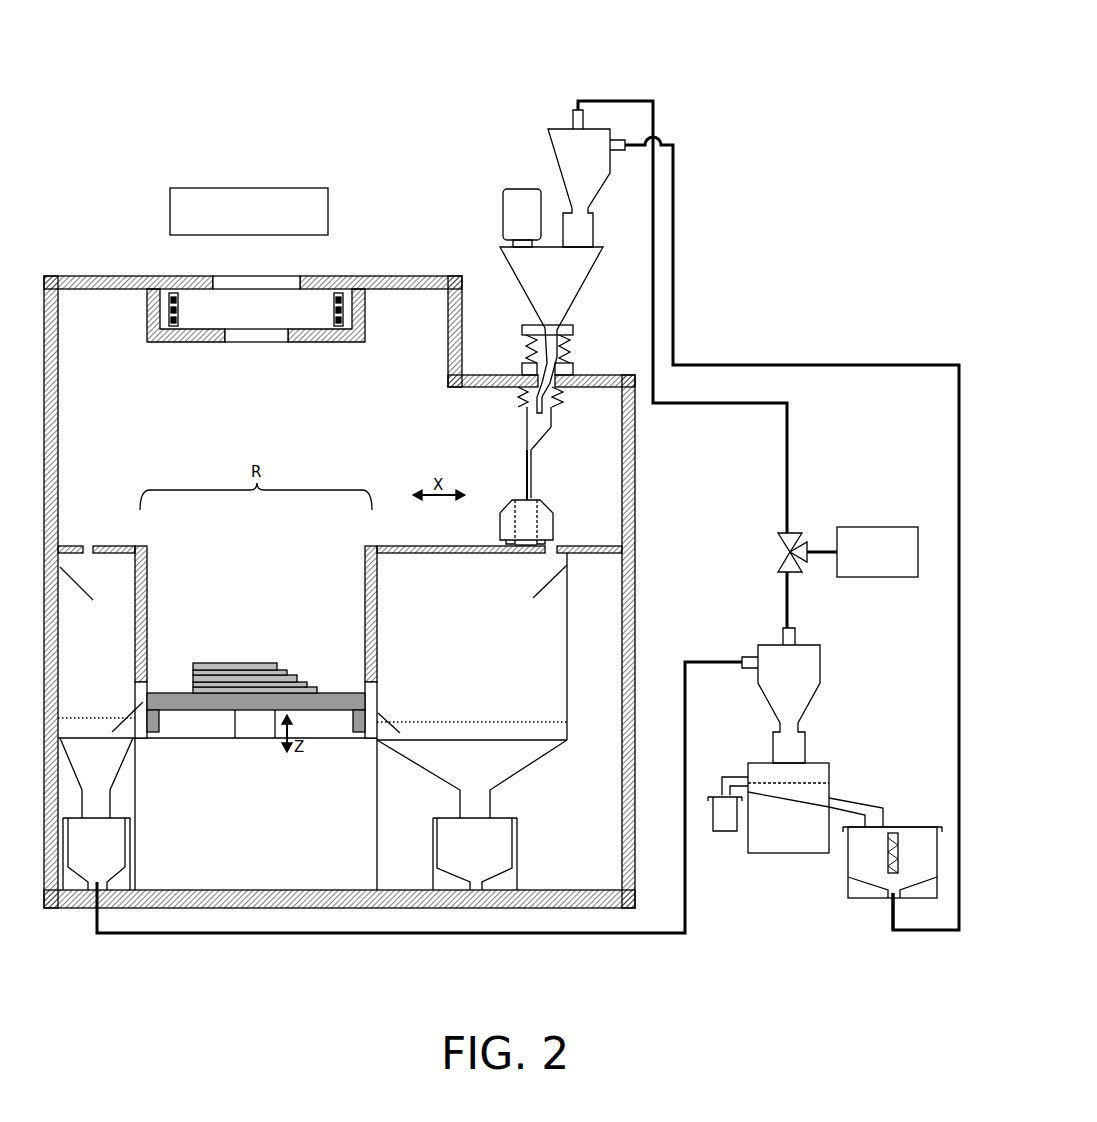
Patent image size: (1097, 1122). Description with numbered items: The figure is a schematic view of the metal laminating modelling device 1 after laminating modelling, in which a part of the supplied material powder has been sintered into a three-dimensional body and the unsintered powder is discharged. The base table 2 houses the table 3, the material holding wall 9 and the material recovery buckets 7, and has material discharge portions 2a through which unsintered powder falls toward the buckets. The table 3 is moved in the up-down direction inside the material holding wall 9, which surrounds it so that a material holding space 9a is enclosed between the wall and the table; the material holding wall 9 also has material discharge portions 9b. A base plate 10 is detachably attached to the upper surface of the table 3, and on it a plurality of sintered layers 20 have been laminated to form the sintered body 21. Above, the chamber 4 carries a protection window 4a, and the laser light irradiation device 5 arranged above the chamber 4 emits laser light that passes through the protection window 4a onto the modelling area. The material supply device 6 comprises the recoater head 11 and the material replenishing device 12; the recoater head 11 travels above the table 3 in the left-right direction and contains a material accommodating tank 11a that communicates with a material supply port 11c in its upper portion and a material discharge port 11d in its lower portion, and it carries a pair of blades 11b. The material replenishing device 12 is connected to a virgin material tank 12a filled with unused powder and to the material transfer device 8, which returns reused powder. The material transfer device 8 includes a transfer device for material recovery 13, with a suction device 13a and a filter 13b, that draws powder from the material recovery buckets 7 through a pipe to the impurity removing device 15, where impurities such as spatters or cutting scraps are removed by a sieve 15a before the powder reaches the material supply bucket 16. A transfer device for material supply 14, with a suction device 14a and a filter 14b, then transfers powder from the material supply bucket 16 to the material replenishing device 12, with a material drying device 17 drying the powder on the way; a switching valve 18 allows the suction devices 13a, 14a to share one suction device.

The metal laminating modelling device 1 is at (78, 205).
The base table 2 is at (440, 546).
The material discharge portions 2a is at (90, 555).
The table 3 is at (200, 697).
The chamber 4 is at (62, 276).
The protection window 4a is at (262, 283).
The laser light irradiation device 5 is at (283, 188).
The material supply device 6 is at (516, 318).
The material recovery buckets 7 is at (112, 845).
The material transfer device 8 is at (624, 193).
The material holding wall 9 is at (377, 618).
The material holding space 9a is at (258, 567).
The material discharge portions 9b is at (135, 690).
The base plate 10 is at (317, 687).
The recoater head 11 is at (545, 500).
The material accommodating tank 11a is at (528, 520).
The blades 11b is at (506, 543).
The material supply port 11c is at (520, 498).
The material discharge port 11d is at (525, 555).
The material replenishing device 12 is at (590, 300).
The virgin material tank 12a is at (510, 210).
The transfer device for material recovery 13 is at (815, 642).
The suction device 13a is at (860, 527).
The filter 13b is at (820, 672).
The transfer device for material supply 14 is at (548, 138).
The suction device 14a is at (893, 527).
The filter 14b is at (548, 158).
The impurity removing device 15 is at (762, 856).
The sieve 15a is at (810, 780).
The material supply bucket 16 is at (850, 872).
The material drying device 17 is at (160, 342).
The switching valve 18 is at (798, 535).
The sintered layer 20 is at (308, 682).
The sintered body 21 is at (337, 645).